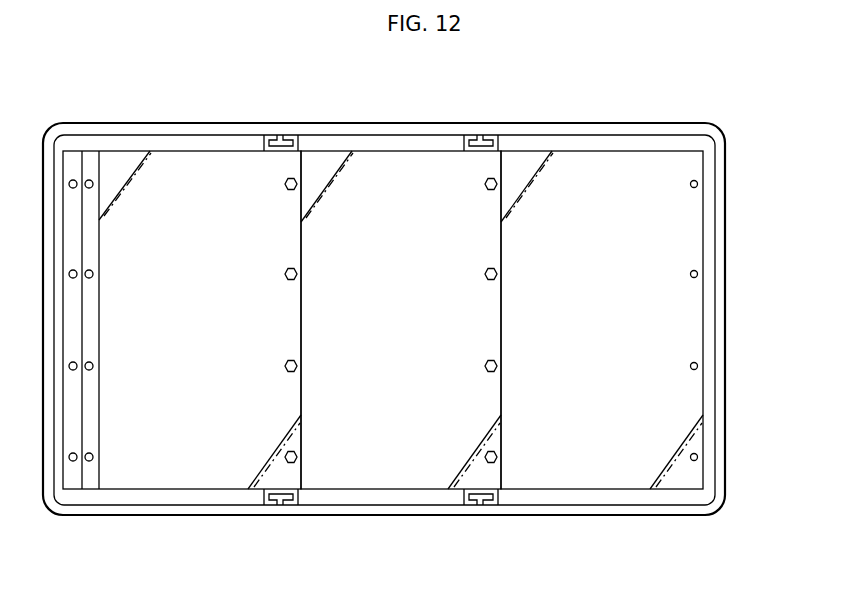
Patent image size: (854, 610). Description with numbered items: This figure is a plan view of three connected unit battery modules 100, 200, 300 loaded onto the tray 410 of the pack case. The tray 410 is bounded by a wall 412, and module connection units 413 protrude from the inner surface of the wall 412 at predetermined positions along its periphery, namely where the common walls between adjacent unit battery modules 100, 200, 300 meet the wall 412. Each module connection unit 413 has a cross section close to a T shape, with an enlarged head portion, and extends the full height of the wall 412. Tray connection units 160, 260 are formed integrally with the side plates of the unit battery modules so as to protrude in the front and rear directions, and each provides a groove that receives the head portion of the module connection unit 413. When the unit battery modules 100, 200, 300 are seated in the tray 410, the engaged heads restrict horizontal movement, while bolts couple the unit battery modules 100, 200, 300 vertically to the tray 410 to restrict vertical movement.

The unit battery module 100 is at (188, 474).
The unit battery module 200 is at (390, 474).
The unit battery module 300 is at (593, 474).
The tray connection unit 160 is at (265, 135).
The tray connection unit 260 is at (467, 135).
The tray 410 is at (736, 306).
The wall 412 is at (380, 130).
The module connection unit 413 is at (282, 139).